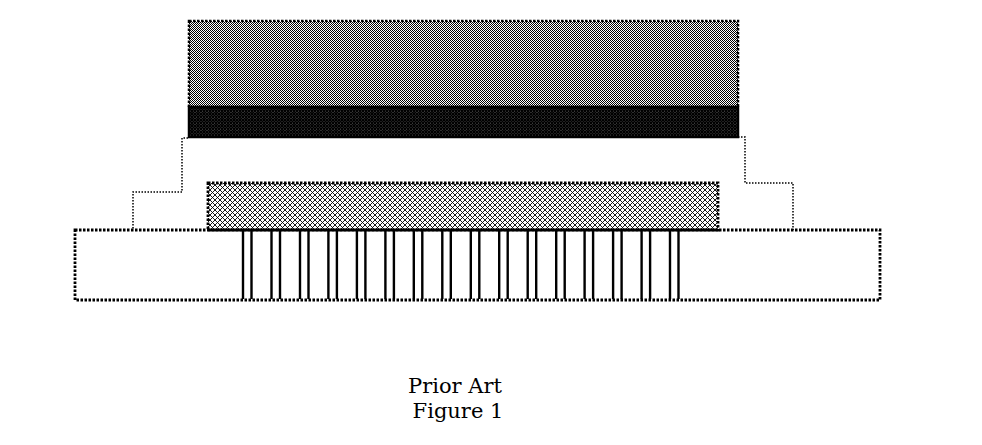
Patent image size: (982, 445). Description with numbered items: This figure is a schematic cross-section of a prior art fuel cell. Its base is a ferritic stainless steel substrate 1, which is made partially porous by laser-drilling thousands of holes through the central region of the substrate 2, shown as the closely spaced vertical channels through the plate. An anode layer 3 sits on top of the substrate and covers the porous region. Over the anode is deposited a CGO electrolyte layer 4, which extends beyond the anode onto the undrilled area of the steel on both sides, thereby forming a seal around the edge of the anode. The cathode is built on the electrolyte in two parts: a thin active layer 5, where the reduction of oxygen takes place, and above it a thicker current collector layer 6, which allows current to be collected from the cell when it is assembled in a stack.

The ferritic stainless steel substrate 1 is at (477, 265).
The central region of the substrate 2 is at (461, 292).
The anode layer 3 is at (463, 206).
The CGO electrolyte layer 4 is at (173, 170).
The thin active layer 5 is at (178, 124).
The current collector layer 6 is at (463, 64).